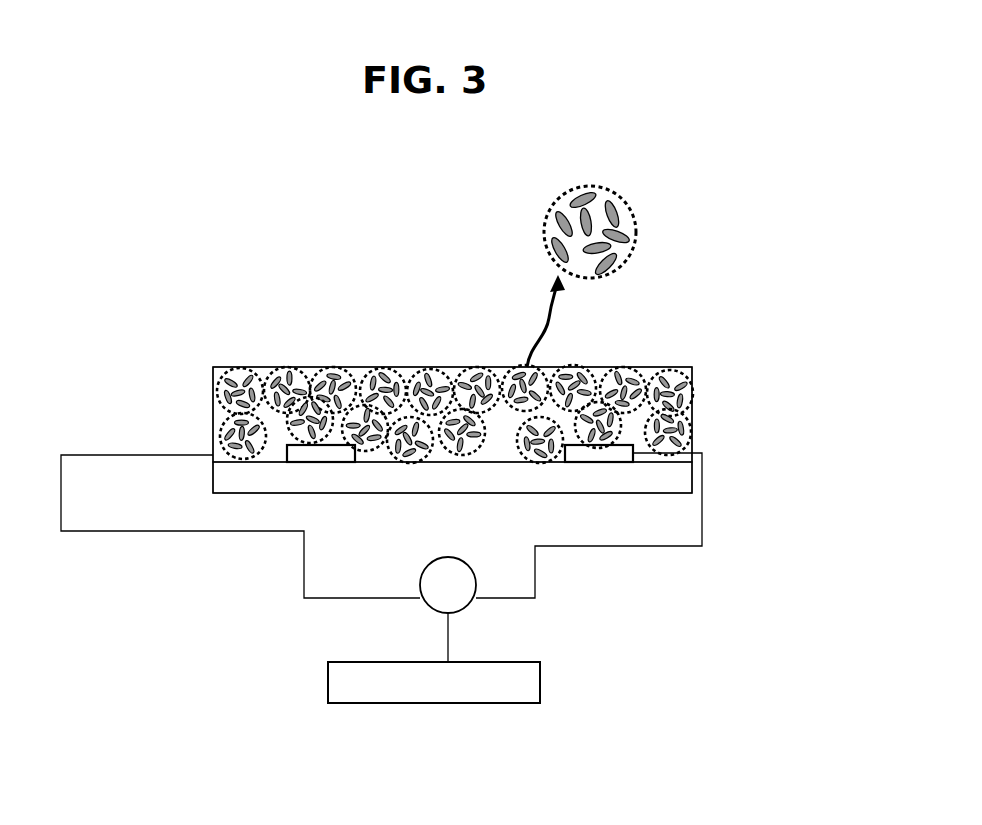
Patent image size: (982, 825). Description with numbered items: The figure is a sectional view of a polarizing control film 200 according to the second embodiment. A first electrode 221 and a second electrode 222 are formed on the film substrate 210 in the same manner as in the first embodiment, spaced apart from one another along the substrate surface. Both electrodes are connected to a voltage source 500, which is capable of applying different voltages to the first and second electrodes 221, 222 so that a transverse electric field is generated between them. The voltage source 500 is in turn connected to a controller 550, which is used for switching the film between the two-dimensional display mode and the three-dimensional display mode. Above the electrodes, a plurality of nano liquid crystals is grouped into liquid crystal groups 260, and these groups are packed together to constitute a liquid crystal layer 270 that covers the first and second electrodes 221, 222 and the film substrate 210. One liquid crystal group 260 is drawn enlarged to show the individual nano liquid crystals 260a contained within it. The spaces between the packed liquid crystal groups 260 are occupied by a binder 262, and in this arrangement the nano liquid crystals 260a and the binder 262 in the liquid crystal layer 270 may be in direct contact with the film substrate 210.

The display device 200 is at (729, 377).
The film substrate 210 is at (260, 478).
The first electrode 221 is at (325, 447).
The second electrode 222 is at (600, 445).
The liquid crystal group 260 is at (213, 381).
The nano liquid crystal 260a is at (620, 262).
The binder 262 is at (213, 410).
The liquid crystal layer 270 is at (376, 315).
The voltage source 500 is at (462, 606).
The controller 550 is at (434, 682).